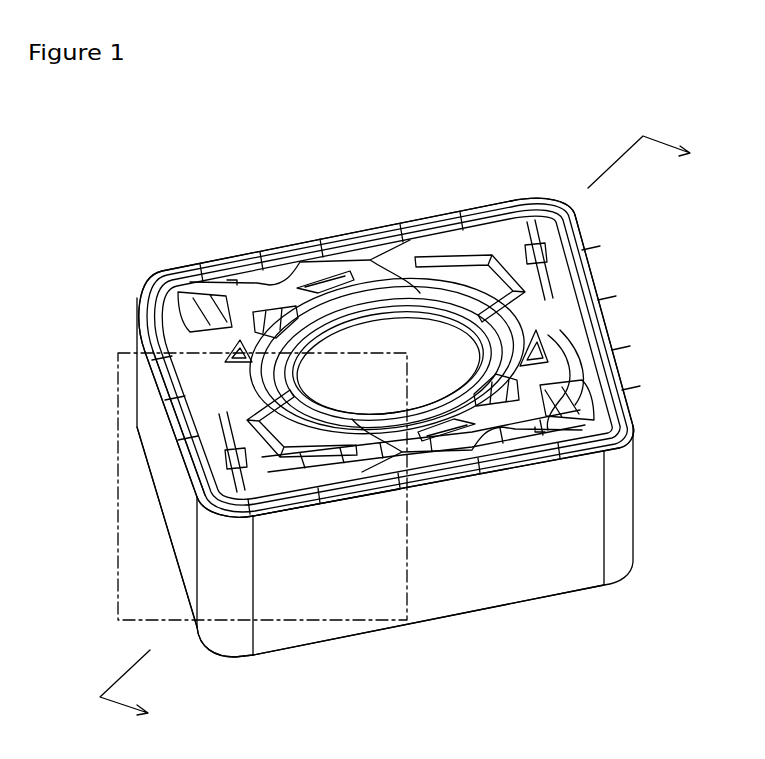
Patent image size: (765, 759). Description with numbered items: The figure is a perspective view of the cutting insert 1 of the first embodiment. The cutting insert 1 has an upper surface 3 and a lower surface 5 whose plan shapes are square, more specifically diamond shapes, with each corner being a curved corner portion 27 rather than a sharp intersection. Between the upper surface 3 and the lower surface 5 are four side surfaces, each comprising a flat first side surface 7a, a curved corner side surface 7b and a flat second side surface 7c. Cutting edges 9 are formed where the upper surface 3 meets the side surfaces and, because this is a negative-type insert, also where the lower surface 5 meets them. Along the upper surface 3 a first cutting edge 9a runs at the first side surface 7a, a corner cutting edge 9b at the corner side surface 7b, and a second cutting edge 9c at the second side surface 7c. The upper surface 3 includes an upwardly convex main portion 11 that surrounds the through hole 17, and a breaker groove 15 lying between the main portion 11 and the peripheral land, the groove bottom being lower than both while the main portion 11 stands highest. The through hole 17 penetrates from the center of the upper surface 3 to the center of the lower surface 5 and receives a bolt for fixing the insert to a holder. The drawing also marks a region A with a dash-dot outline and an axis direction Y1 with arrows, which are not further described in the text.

The cutting insert 1 is at (248, 176).
The upper surface 3 is at (225, 507).
The lower surface 5 is at (370, 541).
The first side surface 7a is at (158, 433).
The corner side surface 7b is at (218, 640).
The second side surface 7c is at (520, 572).
The cutting edge 9 is at (318, 240).
The first cutting edge 9a is at (187, 463).
The corner cutting edge 9b is at (190, 545).
The second cutting edge 9c is at (296, 497).
The main portion 11 is at (221, 299).
The breaker groove 15 is at (573, 323).
The through hole 17 is at (433, 353).
The corner portion 27 is at (228, 633).
The region A is at (300, 622).
The direction Y1 is at (376, 419).